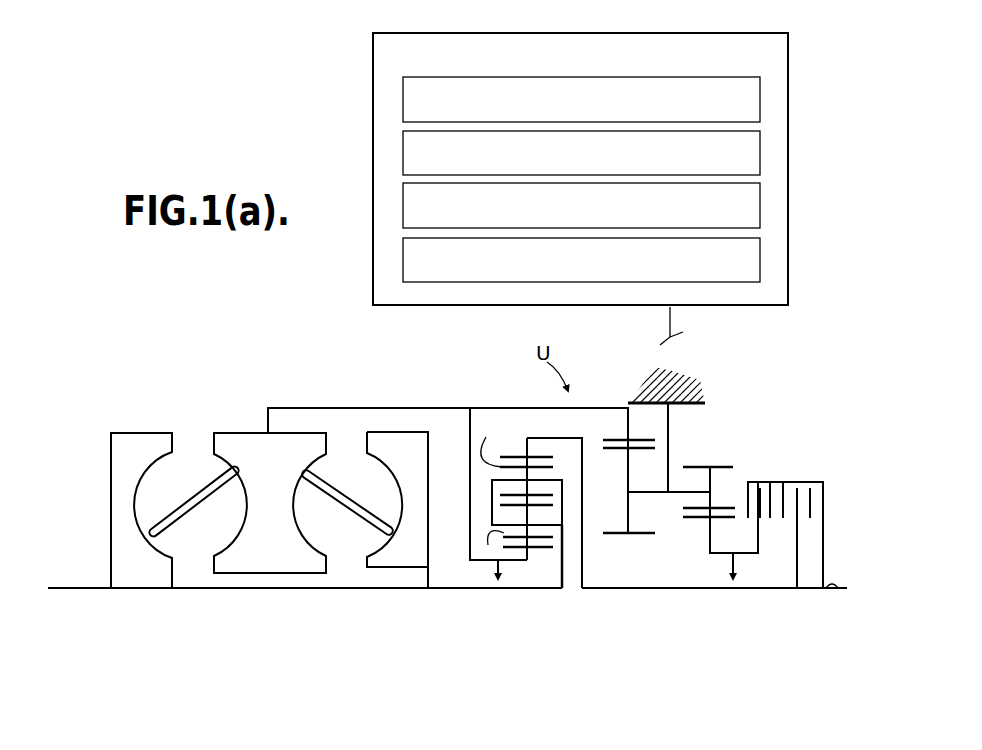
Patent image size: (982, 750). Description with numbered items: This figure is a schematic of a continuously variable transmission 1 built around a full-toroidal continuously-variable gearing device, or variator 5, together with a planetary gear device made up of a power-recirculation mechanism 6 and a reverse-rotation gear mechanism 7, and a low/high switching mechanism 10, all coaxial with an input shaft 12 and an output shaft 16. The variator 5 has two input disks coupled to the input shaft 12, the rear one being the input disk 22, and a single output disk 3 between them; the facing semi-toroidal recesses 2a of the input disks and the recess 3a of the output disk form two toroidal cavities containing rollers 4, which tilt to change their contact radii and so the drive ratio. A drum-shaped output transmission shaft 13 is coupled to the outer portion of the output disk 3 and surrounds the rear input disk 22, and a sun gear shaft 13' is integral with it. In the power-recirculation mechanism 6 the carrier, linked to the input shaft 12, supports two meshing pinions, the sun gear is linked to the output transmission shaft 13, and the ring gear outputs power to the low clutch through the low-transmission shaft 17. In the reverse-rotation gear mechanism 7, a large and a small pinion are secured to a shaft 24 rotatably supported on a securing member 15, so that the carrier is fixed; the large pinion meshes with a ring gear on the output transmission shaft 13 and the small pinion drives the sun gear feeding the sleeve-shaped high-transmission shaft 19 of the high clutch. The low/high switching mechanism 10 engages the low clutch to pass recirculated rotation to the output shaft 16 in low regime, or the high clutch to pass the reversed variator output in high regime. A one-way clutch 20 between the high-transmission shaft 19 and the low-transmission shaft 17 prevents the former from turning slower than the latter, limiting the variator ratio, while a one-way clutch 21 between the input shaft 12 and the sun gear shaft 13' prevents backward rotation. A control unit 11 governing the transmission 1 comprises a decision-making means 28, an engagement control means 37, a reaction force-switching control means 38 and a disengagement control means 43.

The control unit 11 is at (598, 189).
The decision-making means 28 is at (613, 99).
The engagement control means 37 is at (613, 153).
The reaction force-switching control means 38 is at (613, 206).
The disengagement control means 43 is at (613, 260).
The continuously variable transmission 1 is at (397, 382).
The input disk 22 is at (408, 432).
The output disk 3 is at (243, 432).
The rollers 4 is at (192, 497).
The semi-toroidal recess 2a is at (168, 500).
The semi-toroidal recess 3a is at (245, 505).
The full-toroidal continuously-variable gearing device 5 is at (302, 398).
The power-recirculation mechanism 6 is at (518, 400).
The reverse-rotation gear mechanism 7 is at (630, 371).
The low/high switching mechanism 10 is at (773, 445).
The input shaft 12 is at (98, 588).
The output transmission shaft 13 is at (448, 464).
The sun gear shaft 13' is at (455, 599).
The securing member 15 is at (677, 382).
The output shaft 16 is at (826, 586).
The low-transmission shaft 17 is at (635, 587).
The high-transmission shaft 19 is at (748, 555).
The one-way clutch 20 is at (732, 568).
The one-way clutch 21 is at (510, 573).
The shaft 24 is at (668, 497).